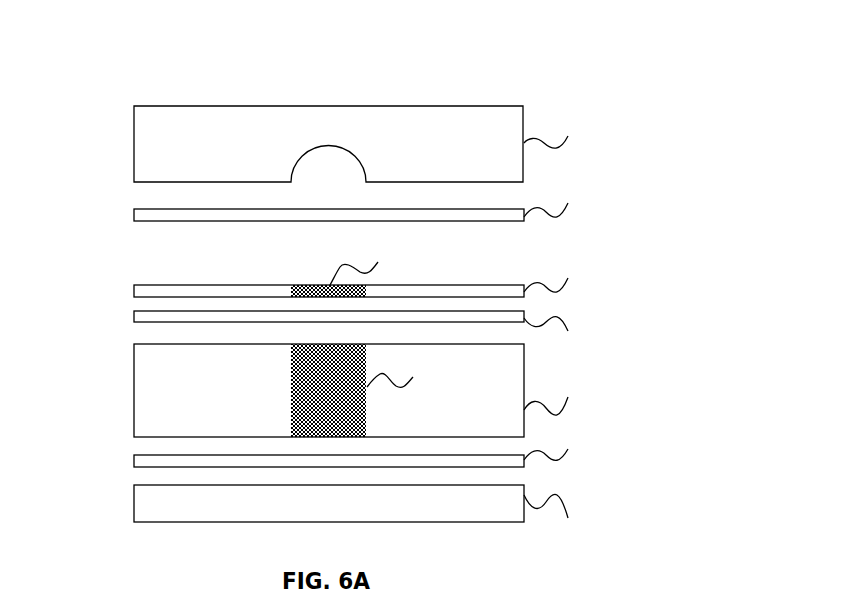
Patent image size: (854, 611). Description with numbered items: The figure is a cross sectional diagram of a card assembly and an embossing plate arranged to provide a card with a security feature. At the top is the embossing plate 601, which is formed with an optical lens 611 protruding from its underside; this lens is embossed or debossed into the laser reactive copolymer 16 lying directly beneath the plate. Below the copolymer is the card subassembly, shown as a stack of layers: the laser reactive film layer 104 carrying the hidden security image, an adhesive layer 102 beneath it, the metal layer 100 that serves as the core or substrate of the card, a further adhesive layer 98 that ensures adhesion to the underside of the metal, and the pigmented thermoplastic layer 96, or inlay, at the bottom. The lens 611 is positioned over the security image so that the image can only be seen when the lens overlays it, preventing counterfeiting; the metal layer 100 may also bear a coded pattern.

The embossing plate 601 is at (134, 138).
The optical lens 611 is at (331, 149).
The laser reactive copolymer 16 is at (134, 213).
The laser reactive film layer 104 is at (134, 287).
The adhesive layer 102 is at (134, 314).
The metal layer 100 is at (134, 391).
The adhesive layer 98 is at (134, 457).
The thermoplastic layer 96 is at (134, 498).